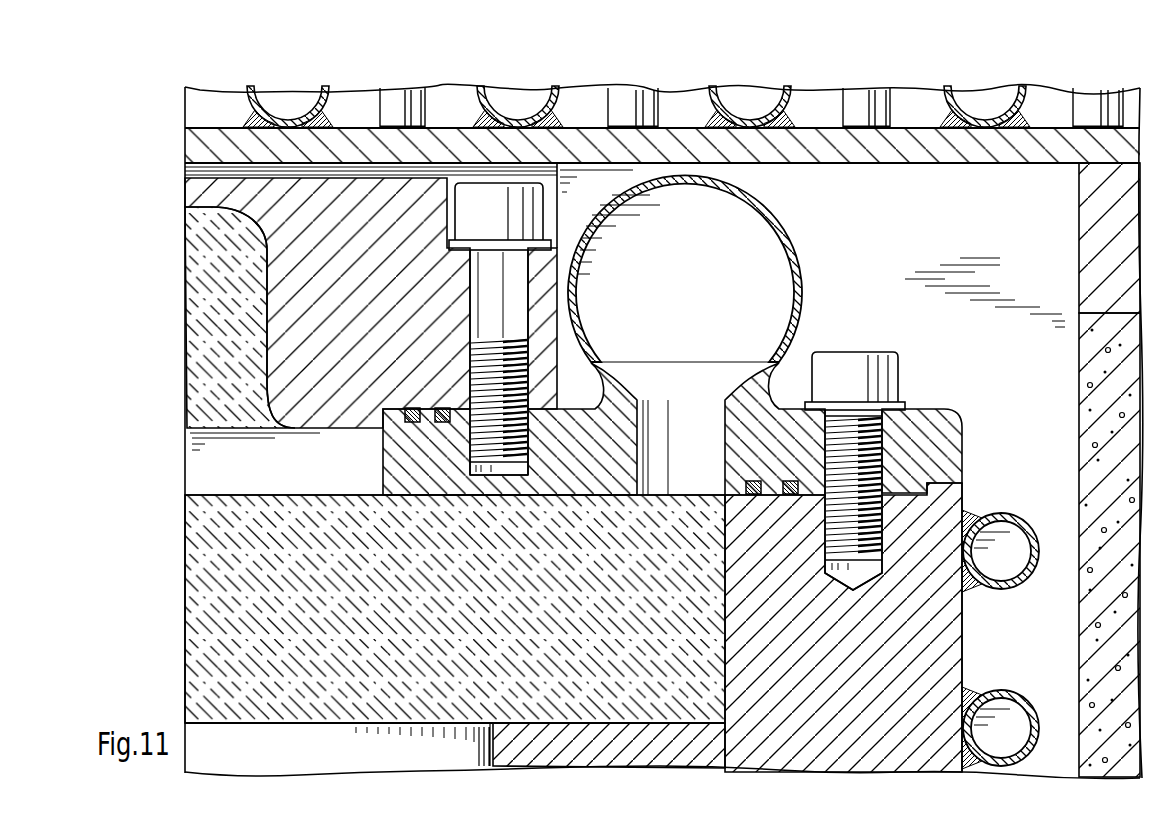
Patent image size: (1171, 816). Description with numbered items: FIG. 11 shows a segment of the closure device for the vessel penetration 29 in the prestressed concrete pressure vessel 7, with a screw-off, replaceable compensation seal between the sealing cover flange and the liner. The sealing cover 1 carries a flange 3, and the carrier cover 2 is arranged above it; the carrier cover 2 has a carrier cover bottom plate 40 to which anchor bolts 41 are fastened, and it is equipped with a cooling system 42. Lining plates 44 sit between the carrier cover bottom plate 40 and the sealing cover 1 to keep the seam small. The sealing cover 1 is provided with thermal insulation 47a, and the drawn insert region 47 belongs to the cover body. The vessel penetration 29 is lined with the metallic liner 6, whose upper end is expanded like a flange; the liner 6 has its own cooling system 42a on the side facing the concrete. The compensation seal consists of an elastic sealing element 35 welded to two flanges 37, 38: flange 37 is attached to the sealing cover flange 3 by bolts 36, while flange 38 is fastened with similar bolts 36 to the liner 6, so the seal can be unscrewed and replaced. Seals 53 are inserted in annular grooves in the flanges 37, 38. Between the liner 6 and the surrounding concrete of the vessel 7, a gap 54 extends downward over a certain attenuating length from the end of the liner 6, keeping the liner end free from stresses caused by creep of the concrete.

The sealing cover 1 is at (222, 193).
The carrier cover 2 is at (1058, 112).
The flange 3 is at (368, 195).
The liner 6 is at (935, 632).
The prestressed concrete pressure vessel 7 is at (1095, 370).
The vessel penetration 29 is at (268, 766).
The elastic sealing element 35 is at (802, 268).
The bolts 36 is at (483, 195).
The flange 37 is at (582, 428).
The flange 38 is at (945, 458).
The carrier cover bottom plate 40 is at (900, 148).
The anchor bolts 41 is at (856, 102).
The cooling system 42 is at (979, 120).
The cooling system 42a is at (1010, 530).
The lining plates 44 is at (547, 163).
The insert 47 is at (207, 298).
The thermal insulation 47a is at (490, 752).
The seals 53 is at (442, 422).
The gap 54 is at (1017, 671).